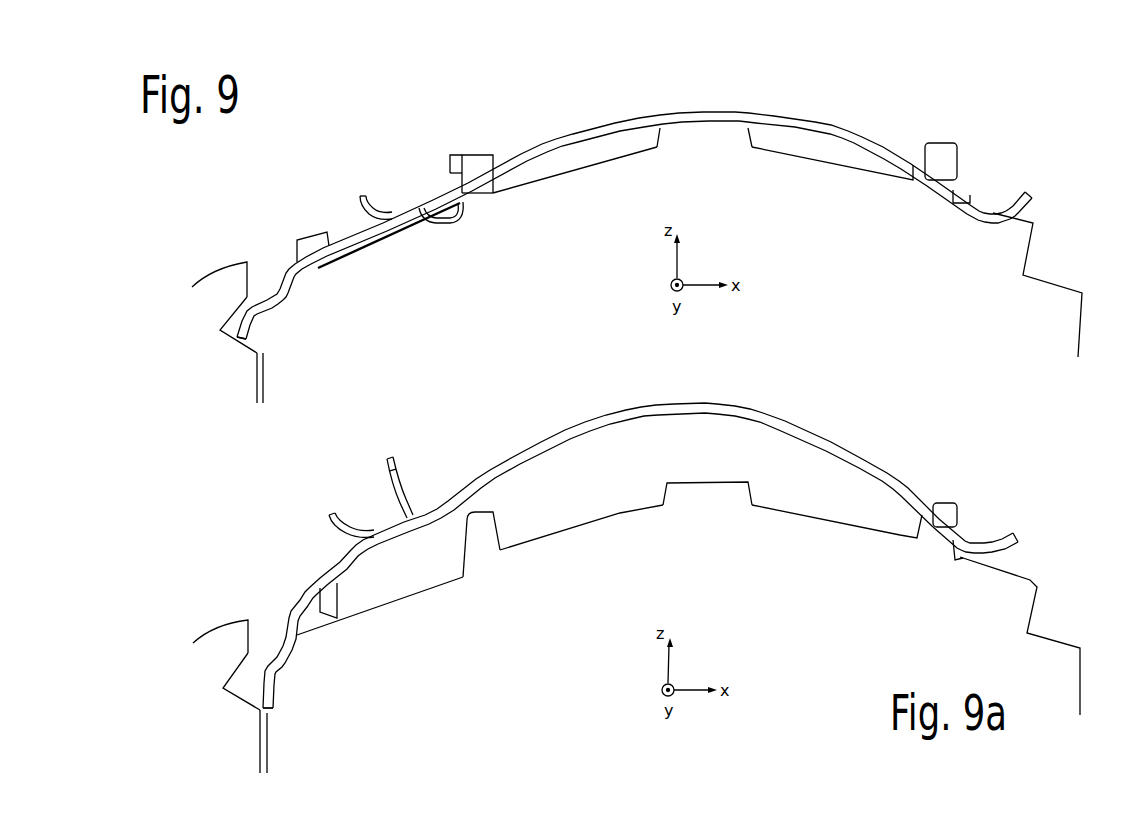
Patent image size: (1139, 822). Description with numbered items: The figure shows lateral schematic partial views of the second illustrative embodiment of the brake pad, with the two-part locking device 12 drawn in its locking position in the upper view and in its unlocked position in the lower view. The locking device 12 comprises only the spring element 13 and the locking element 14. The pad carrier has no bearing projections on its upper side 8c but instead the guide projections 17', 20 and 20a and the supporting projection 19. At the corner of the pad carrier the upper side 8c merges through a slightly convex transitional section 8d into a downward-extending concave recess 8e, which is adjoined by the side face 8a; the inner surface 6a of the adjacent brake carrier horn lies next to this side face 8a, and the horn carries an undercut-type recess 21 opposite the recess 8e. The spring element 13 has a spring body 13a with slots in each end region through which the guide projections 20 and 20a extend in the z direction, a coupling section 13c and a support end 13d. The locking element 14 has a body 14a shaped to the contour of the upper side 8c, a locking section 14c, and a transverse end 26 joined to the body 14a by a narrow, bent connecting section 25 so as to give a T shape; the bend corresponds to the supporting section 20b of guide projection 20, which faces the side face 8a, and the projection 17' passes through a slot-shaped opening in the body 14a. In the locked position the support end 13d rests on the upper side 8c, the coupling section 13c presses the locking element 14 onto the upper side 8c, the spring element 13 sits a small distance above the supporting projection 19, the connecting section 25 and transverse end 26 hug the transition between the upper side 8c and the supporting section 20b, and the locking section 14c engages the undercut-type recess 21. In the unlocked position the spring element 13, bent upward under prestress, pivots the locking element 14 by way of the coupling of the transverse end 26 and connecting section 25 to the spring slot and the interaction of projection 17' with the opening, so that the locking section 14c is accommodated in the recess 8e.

In FIG. 9, the inner surface 6a is at (263, 403).
In FIG. 9A, the inner surface 6a is at (267, 762).
In FIG. 9, the side face 8a is at (253, 372).
In FIG. 9A, the side face 8a is at (260, 727).
In FIG. 9, the upper side 8c is at (377, 250).
In FIG. 9A, the upper side 8c is at (388, 588).
In FIG. 9, the transitional section 8d is at (310, 283).
In FIG. 9A, the transitional section 8d is at (320, 633).
In FIG. 9, the recess 8e is at (270, 302).
In FIG. 9A, the recess 8e is at (277, 660).
In FIG. 9, the locking device 12 is at (542, 127).
In FIG. 9A, the locking device 12 is at (562, 385).
In FIG. 9, the spring element 13 is at (658, 112).
In FIG. 9A, the spring element 13 is at (632, 405).
In FIG. 9, the spring body 13a is at (607, 130).
In FIG. 9A, the spring body 13a is at (493, 470).
In FIG. 9, the coupling section 13c is at (380, 203).
In FIG. 9A, the coupling section 13c is at (347, 513).
In FIG. 9, the support end 13d is at (993, 213).
In FIG. 9A, the support end 13d is at (990, 537).
In FIG. 9, the locking element 14 is at (283, 260).
In FIG. 9A, the locking element 14 is at (303, 580).
In FIG. 9, the body 14a is at (325, 265).
In FIG. 9, the locking section 14c is at (265, 320).
In FIG. 9A, the locking section 14c is at (282, 683).
In FIG. 9, the guide projection 17' is at (303, 217).
In FIG. 9A, the guide projection 17' is at (319, 554).
In FIG. 9, the supporting projection 19 is at (708, 138).
In FIG. 9A, the supporting projection 19 is at (712, 493).
In FIG. 9, the guide projection 20 is at (480, 157).
In FIG. 9A, the guide projection 20 is at (487, 532).
In FIG. 9, the guide projection 20a is at (940, 160).
In FIG. 9A, the guide projection 20a is at (950, 507).
In FIG. 9, the supporting section 20b is at (465, 200).
In FIG. 9A, the supporting section 20b is at (463, 543).
In FIG. 9, the undercut-type recess 21 is at (227, 315).
In FIG. 9A, the undercut-type recess 21 is at (243, 673).
In FIG. 9, the connecting section 25 is at (447, 227).
In FIG. 9A, the connecting section 25 is at (407, 488).
In FIG. 9, the transverse end 26 is at (452, 157).
In FIG. 9A, the transverse end 26 is at (392, 457).